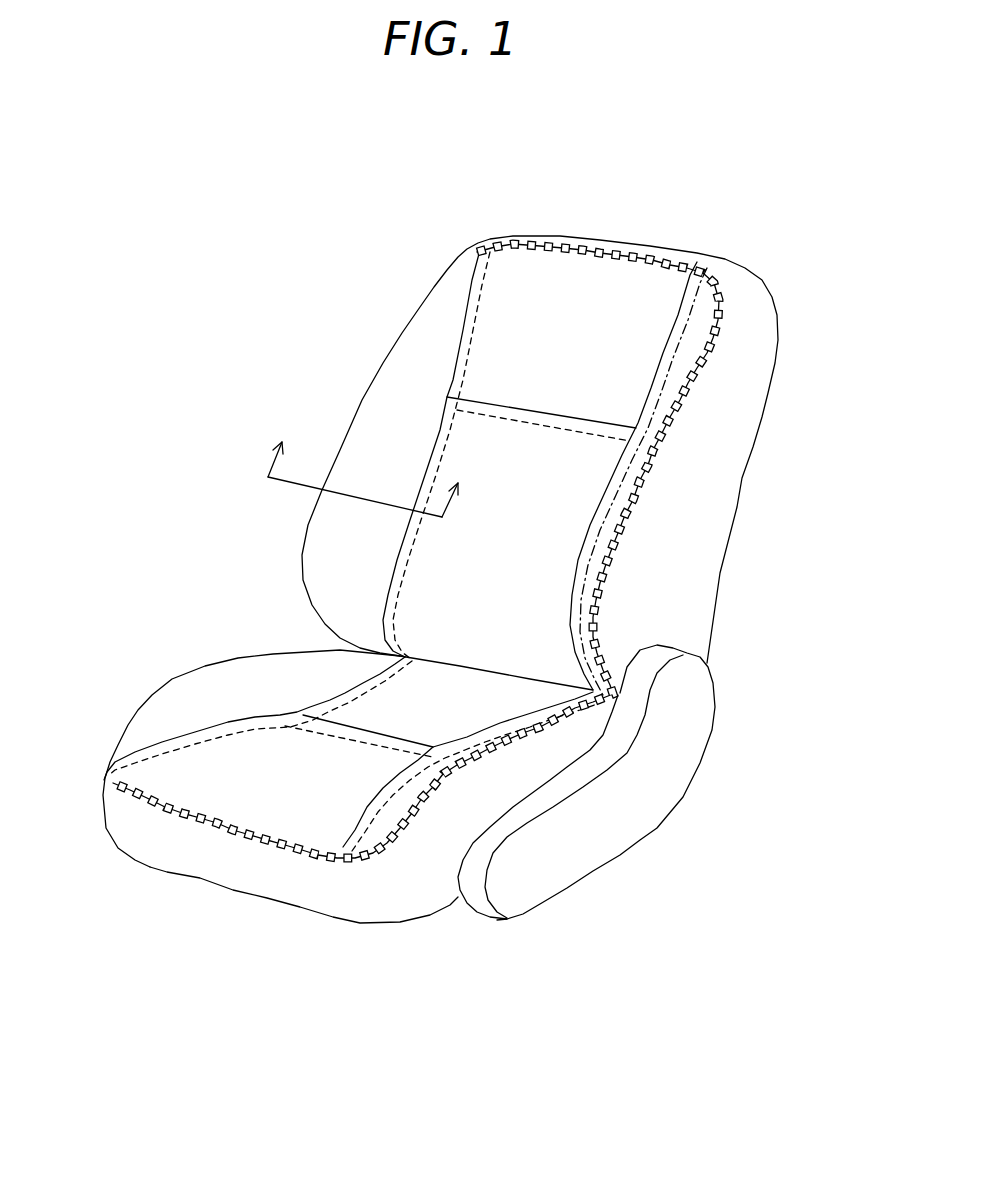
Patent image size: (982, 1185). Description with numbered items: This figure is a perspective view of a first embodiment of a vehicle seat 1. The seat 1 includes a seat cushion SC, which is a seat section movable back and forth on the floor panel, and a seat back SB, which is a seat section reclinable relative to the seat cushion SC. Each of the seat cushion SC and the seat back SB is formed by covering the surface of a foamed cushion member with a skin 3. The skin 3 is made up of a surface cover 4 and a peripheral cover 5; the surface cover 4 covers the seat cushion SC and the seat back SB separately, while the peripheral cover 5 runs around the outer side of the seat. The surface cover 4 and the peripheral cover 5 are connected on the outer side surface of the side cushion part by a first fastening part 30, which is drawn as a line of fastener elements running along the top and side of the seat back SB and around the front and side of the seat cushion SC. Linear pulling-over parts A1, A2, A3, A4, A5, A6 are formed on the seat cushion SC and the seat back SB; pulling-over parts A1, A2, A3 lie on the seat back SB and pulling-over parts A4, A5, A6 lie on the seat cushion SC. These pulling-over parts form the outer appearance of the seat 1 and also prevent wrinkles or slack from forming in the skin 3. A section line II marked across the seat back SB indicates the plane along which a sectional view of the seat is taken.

The vehicle seat 1 is at (380, 278).
The skin 3 is at (697, 520).
The surface cover 4 is at (577, 283).
The peripheral cover 5 is at (737, 381).
The first fastening part 30 is at (393, 855).
The seat back SB is at (357, 409).
The seat cushion SC is at (148, 696).
The pulling-over part A1 is at (460, 368).
The pulling-over part A2 is at (597, 500).
The pulling-over part A3 is at (528, 420).
The pulling-over part A4 is at (260, 715).
The pulling-over part A5 is at (479, 737).
The pulling-over part A6 is at (350, 737).
The line II- II is at (370, 463).